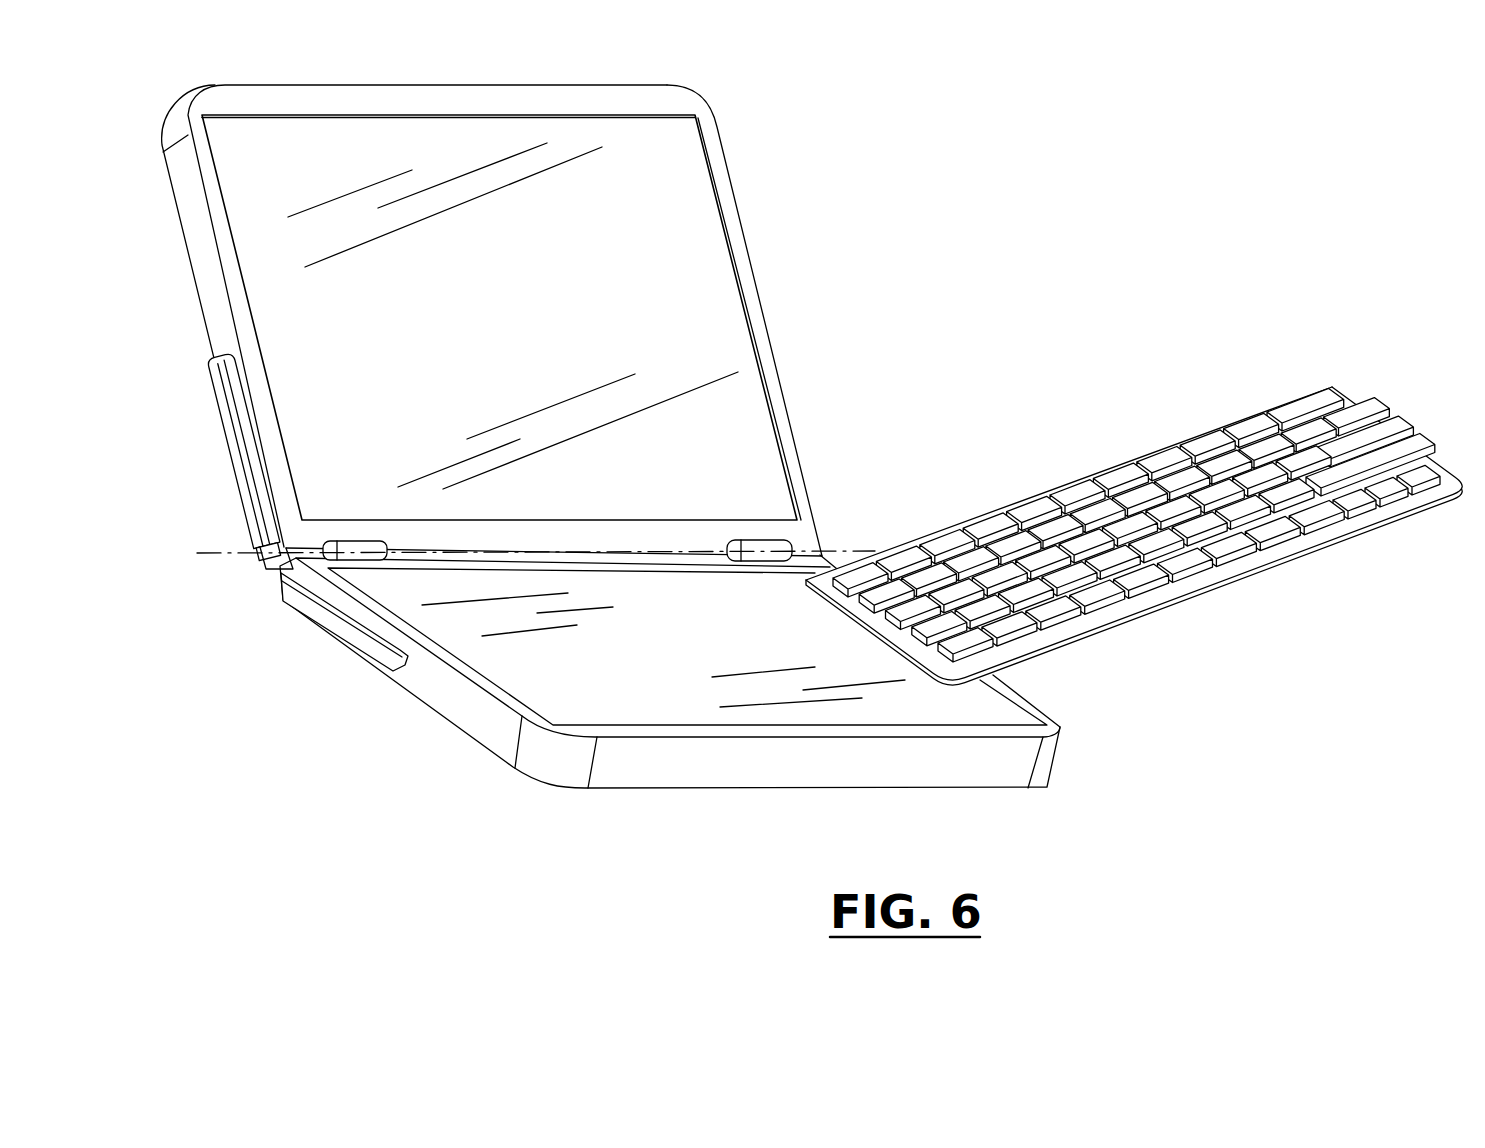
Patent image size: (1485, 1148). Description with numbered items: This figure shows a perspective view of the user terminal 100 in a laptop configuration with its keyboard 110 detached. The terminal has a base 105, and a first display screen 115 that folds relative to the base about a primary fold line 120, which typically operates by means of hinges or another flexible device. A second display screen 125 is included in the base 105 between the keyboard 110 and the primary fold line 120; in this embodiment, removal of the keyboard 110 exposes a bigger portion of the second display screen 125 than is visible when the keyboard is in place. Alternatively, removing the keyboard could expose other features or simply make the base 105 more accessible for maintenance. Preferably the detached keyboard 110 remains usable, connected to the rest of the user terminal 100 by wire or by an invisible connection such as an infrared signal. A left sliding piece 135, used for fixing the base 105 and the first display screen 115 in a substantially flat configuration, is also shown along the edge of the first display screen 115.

The user terminal 100 is at (790, 429).
The base 105 is at (714, 673).
The keyboard 110 is at (1343, 400).
The first display screen 115 is at (519, 307).
The primary fold line 120 is at (227, 547).
The second display screen 125 is at (683, 664).
The left sliding piece 135 is at (213, 385).